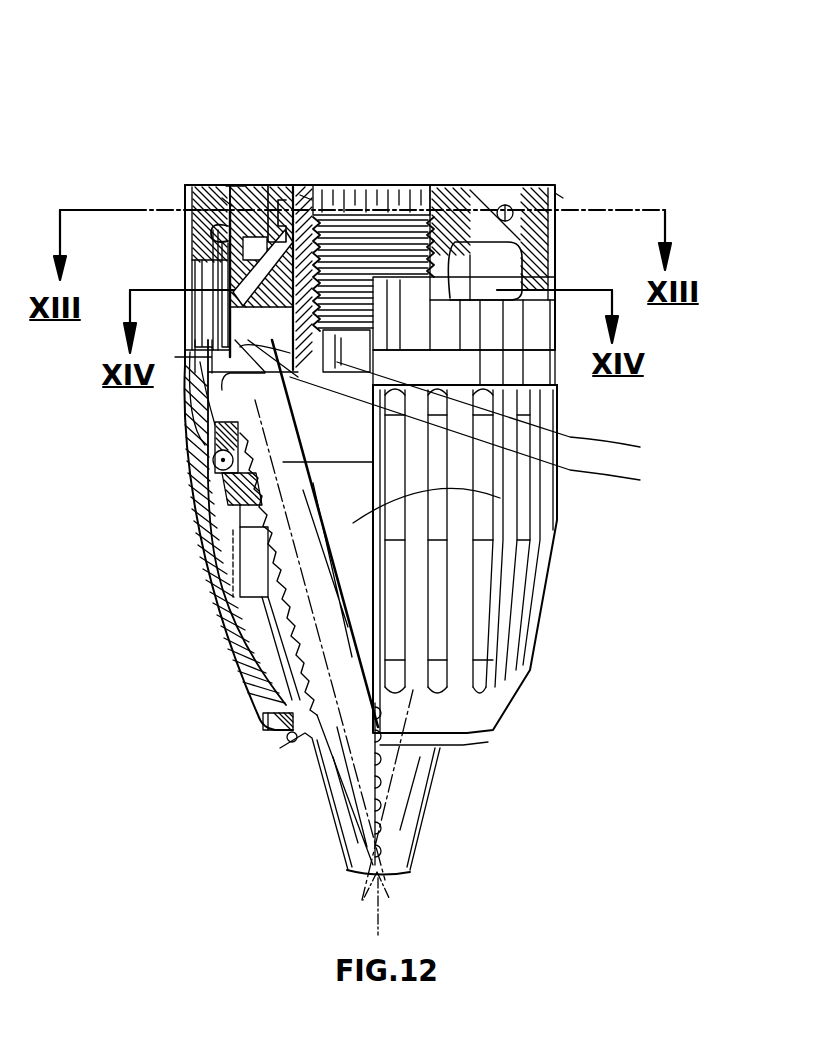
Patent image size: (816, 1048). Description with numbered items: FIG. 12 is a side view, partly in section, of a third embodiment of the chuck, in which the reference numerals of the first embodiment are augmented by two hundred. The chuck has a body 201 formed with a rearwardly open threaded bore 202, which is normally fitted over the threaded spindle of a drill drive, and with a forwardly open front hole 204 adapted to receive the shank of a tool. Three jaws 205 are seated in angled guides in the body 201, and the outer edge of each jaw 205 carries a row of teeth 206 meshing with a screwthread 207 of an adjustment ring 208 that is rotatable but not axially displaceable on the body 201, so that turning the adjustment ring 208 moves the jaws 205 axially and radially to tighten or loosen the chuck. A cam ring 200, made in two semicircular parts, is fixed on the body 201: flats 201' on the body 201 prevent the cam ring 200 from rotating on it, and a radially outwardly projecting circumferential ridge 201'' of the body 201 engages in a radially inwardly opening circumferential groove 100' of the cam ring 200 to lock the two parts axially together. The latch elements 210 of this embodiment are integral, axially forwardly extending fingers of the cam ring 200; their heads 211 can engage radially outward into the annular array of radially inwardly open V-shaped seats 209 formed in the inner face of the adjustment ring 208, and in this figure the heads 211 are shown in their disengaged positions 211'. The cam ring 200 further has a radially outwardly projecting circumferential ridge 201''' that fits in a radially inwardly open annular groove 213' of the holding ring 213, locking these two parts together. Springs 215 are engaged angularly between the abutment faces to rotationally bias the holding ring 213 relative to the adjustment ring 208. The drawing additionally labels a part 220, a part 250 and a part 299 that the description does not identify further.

The circumferential groove 100' is at (253, 183).
The cam ring 200 is at (335, 205).
The chuck body 201 is at (461, 474).
The flats 201' is at (499, 353).
The circumferential ridge 201'' is at (459, 139).
The circumferential ridge 201''' is at (184, 143).
The threaded bore 202 is at (413, 190).
The front hole 204 is at (557, 547).
The jaws 205 is at (250, 687).
The teeth 206 is at (265, 722).
The screwthread 207 is at (214, 470).
The adjustment ring 208 is at (214, 470).
The V-shaped seats 209 is at (205, 395).
The latch elements 210 is at (231, 325).
The heads 211 is at (153, 403).
The disengaged position of the heads 211' is at (519, 413).
The holding ring 213 is at (366, 255).
The annular groove 213' is at (160, 167).
The springs 215 is at (520, 186).
The spring band 220 is at (221, 268).
The housing 250 is at (229, 186).
The detent ball 299 is at (210, 236).